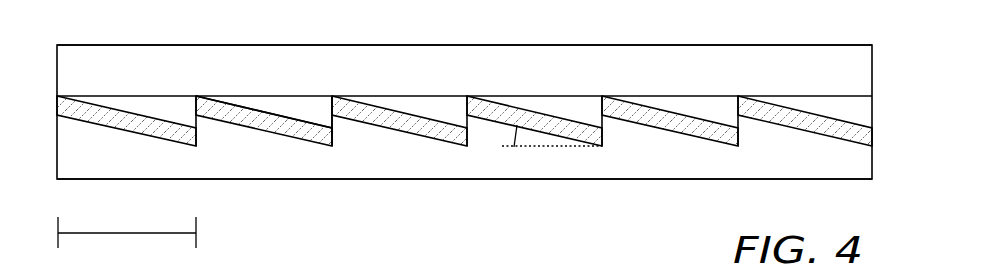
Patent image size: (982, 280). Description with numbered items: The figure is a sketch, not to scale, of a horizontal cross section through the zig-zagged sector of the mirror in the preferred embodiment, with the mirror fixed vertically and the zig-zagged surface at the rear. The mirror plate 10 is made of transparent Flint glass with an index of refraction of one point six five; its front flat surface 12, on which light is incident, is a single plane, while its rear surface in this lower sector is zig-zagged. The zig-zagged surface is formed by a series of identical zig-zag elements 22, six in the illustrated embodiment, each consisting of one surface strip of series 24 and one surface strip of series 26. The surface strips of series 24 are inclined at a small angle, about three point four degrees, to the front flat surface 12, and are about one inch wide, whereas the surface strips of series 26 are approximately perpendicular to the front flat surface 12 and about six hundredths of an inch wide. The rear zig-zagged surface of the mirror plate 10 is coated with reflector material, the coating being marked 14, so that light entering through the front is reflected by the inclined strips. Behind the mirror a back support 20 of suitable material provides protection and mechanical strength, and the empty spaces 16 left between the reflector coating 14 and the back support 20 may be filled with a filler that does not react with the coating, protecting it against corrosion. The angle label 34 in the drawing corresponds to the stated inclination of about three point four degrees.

The mirror plate 10 is at (464, 112).
The front flat surface 12 is at (602, 180).
The reflector coating 14 is at (428, 130).
The empty spaces 16 is at (452, 110).
The back support 20 is at (464, 69).
The zig-zag elements 22 is at (127, 219).
The surface strips of series 24 is at (247, 127).
The surface strips of series 26 is at (332, 123).
The facet angle of 34 degrees 34 is at (513, 135).